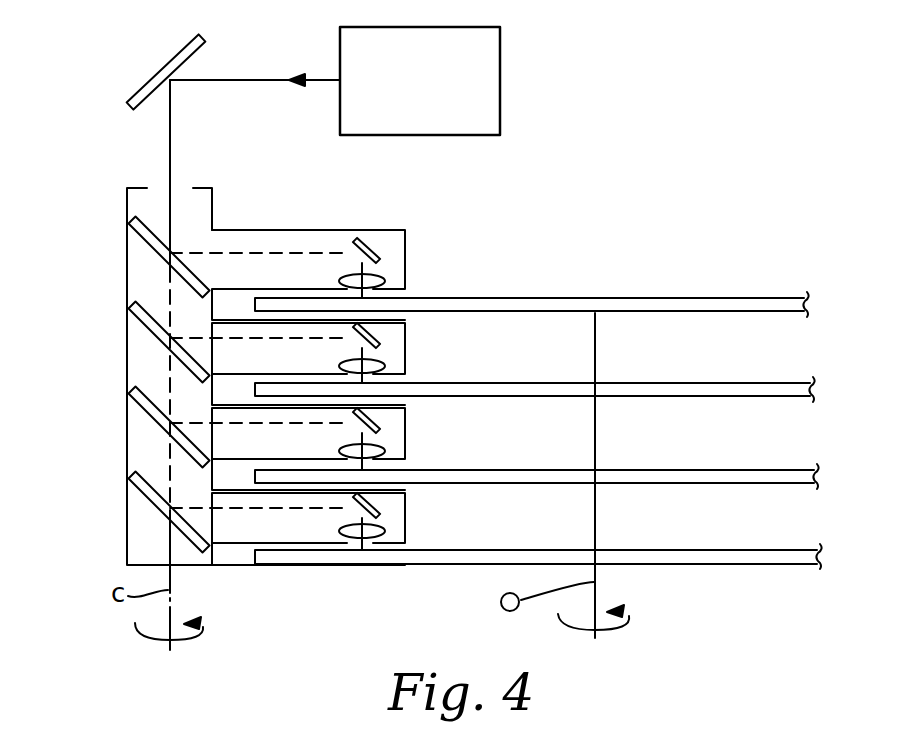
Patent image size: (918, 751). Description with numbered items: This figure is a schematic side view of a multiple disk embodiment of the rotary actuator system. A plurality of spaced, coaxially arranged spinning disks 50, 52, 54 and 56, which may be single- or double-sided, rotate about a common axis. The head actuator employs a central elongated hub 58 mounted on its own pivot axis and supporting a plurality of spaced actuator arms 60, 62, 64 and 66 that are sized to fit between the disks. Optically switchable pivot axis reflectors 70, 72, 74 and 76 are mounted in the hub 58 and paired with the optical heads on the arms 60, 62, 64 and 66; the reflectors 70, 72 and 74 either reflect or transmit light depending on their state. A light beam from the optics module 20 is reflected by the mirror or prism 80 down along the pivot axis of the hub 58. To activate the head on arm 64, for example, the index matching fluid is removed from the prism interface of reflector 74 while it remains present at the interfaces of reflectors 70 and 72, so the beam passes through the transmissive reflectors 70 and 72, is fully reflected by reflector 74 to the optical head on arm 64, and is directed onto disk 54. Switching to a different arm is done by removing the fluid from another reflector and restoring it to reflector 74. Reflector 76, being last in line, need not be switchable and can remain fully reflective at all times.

The optics module 20 is at (500, 72).
The mirror or prism 80 is at (180, 50).
The central elongated hub 58 is at (116, 364).
The pivot axis reflector 70 is at (140, 238).
The pivot axis reflector 72 is at (142, 323).
The pivot axis reflector 74 is at (140, 410).
The pivot axis reflector 76 is at (140, 496).
The actuator arm 60 is at (405, 243).
The actuator arm 62 is at (405, 347).
The actuator arm 64 is at (405, 433).
The actuator arm 66 is at (405, 517).
The spinning disk 50 is at (700, 298).
The spinning disk 52 is at (700, 383).
The spinning disk 54 is at (700, 470).
The spinning disk 56 is at (700, 550).